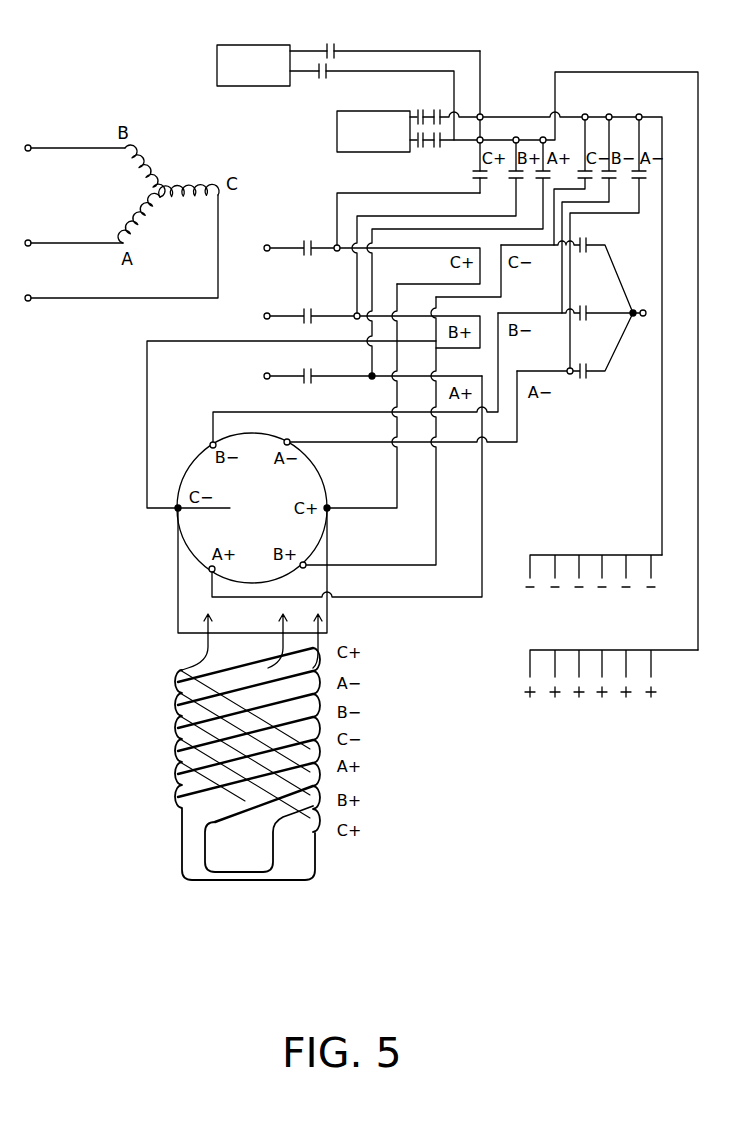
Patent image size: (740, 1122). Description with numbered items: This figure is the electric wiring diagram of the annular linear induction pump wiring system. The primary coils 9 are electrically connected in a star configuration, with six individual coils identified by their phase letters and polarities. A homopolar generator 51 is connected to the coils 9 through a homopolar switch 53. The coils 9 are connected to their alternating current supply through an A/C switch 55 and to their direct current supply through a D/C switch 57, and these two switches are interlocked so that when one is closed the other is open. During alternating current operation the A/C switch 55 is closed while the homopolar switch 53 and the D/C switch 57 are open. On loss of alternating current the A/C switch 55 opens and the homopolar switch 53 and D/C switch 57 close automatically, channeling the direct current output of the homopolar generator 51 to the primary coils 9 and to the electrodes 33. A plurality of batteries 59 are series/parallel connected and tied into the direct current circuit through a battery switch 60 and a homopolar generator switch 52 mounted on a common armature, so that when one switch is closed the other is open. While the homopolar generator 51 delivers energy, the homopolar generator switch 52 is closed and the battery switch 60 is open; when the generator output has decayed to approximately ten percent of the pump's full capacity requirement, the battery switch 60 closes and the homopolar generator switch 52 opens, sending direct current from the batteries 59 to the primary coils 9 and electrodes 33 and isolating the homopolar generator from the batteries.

The primary coils 9 is at (203, 847).
The electrodes 33 is at (597, 626).
The homopolar generator 51 is at (387, 142).
The homopolar generator switch 52 is at (437, 109).
The homopolar switch 53 is at (417, 110).
The A/C switch 55 is at (310, 243).
The D/C switch 57 is at (474, 176).
The batteries 59 is at (266, 76).
The battery switch 60 is at (331, 43).